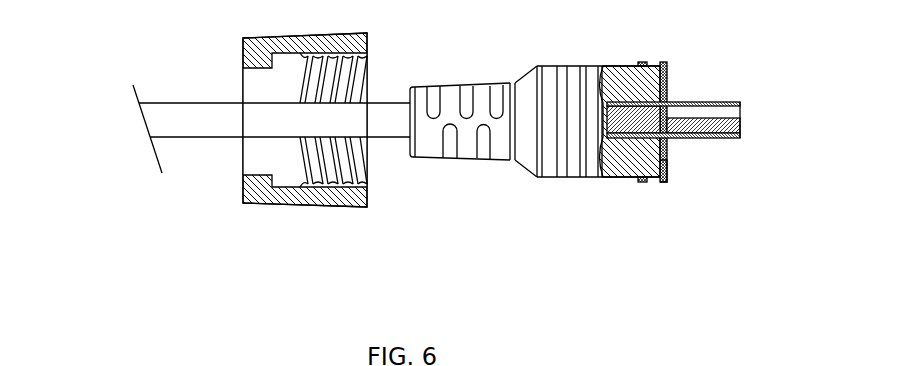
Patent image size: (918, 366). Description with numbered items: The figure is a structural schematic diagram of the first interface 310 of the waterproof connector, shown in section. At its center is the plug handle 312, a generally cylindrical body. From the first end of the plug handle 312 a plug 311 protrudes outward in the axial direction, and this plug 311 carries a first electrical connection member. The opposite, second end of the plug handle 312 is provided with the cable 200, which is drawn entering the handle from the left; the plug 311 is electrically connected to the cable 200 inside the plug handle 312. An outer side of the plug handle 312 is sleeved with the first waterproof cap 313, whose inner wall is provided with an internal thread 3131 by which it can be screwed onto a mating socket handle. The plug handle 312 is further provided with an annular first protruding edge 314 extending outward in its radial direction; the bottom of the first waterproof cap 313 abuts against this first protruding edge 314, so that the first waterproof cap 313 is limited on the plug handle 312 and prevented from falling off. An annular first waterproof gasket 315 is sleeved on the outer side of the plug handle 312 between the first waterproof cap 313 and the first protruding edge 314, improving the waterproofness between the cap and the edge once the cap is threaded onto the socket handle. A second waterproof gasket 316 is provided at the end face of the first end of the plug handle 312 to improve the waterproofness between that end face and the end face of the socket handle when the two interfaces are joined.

The cable 200 is at (196, 102).
The first interface 310 is at (489, 266).
The plug 311 is at (745, 122).
The plug handle 312 is at (522, 80).
The first waterproof cap 313 is at (319, 132).
The internal thread 3131 is at (353, 153).
The first protruding edge 314 is at (654, 62).
The first waterproof gasket 315 is at (642, 63).
The second waterproof gasket 316 is at (668, 164).